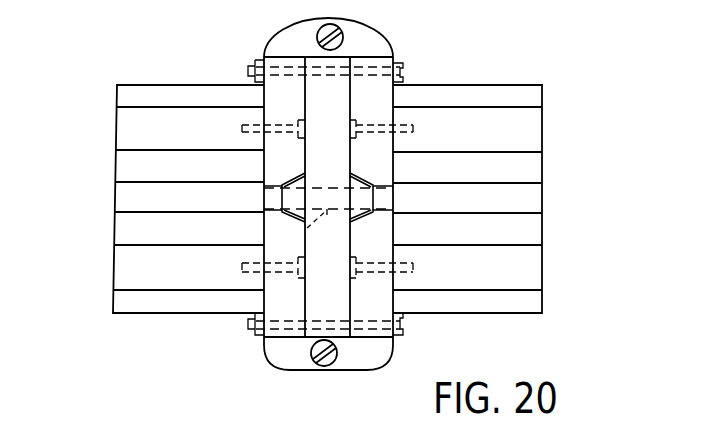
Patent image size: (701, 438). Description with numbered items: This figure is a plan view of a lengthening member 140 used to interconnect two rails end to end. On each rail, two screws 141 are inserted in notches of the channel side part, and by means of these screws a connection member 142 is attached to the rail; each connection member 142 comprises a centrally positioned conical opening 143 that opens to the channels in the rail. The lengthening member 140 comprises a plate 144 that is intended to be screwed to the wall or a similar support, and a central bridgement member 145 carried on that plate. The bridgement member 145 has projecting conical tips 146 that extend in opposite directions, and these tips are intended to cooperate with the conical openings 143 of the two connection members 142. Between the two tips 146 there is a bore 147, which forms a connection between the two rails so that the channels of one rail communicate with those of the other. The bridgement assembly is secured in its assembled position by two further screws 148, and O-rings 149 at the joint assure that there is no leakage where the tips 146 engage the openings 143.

The lengthening member 140 is at (394, 350).
The screws 141 is at (240, 125).
The connection member 142 is at (282, 297).
The conical opening 143 is at (282, 190).
The plate 144 is at (387, 33).
The central bridgement member 145 is at (317, 305).
The conical tips 146 is at (376, 194).
The bore 147 is at (307, 229).
The screws 148 is at (405, 68).
The O-rings 149 is at (357, 218).